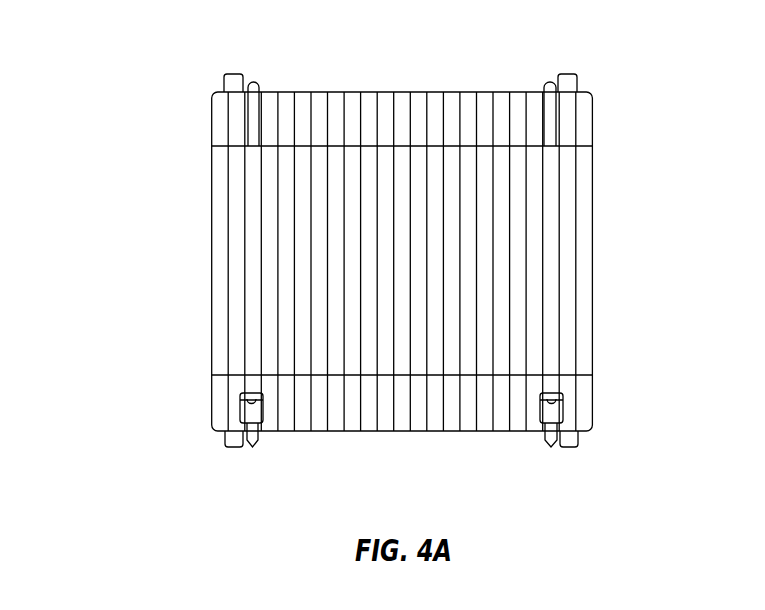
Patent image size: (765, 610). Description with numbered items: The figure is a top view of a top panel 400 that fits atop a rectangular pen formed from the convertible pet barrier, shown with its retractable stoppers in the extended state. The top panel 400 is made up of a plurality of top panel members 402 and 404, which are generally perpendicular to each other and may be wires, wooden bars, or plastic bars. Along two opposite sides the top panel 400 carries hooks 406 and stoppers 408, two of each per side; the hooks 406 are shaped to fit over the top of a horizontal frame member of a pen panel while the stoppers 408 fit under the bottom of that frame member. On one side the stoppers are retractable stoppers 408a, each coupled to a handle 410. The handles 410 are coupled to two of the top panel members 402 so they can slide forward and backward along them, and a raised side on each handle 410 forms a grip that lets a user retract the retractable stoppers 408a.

The top panel 400 is at (164, 46).
The top panel member 402 is at (243, 205).
The top panel member 404 is at (230, 378).
The hook 406 is at (234, 73).
The stopper 408 is at (259, 85).
The retractable stopper 408a is at (256, 446).
The handle 410 is at (242, 408).